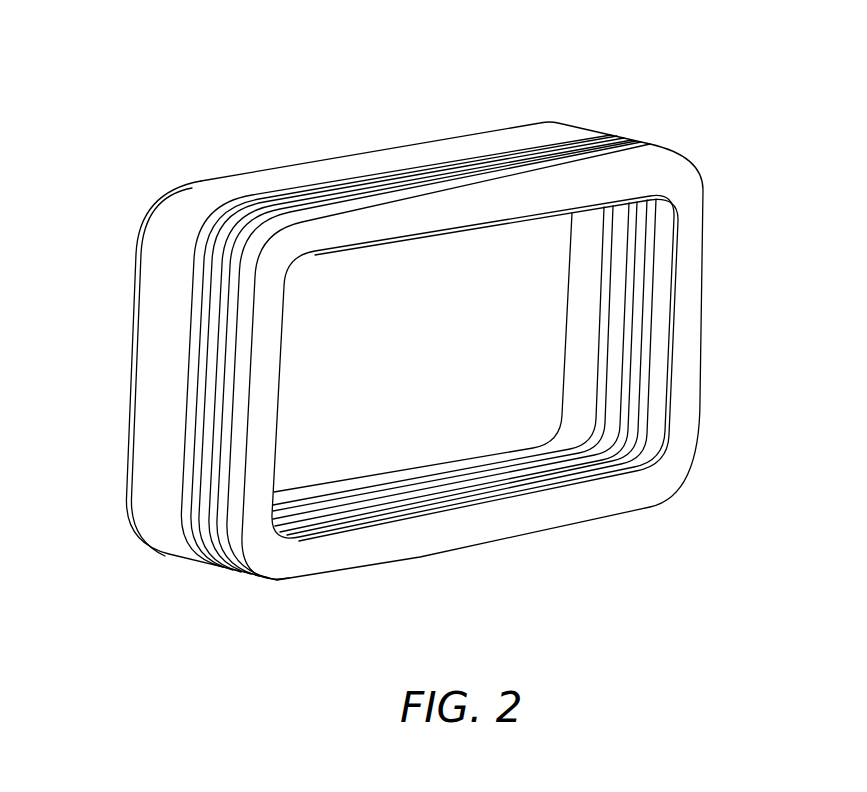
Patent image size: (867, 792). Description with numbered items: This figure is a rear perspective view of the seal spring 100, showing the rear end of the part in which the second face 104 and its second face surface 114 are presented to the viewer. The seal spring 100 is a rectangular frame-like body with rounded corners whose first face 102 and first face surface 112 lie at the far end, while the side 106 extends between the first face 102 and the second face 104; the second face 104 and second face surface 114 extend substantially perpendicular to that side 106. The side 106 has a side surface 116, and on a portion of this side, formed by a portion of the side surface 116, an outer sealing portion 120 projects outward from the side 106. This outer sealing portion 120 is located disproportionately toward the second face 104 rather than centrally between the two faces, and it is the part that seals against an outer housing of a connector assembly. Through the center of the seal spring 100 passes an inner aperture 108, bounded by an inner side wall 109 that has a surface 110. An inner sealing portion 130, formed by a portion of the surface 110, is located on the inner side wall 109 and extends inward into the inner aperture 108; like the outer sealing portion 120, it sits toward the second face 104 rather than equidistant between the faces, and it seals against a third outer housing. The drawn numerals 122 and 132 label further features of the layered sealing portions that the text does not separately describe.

The seal spring 100 is at (250, 148).
The first face 102 is at (145, 237).
The second face 104 is at (650, 490).
The side 106 is at (518, 133).
The inner aperture 108 is at (343, 467).
The inner side wall 109 is at (670, 322).
The surface 110 is at (587, 247).
The first face surface 112 is at (425, 143).
The second face surface 114 is at (687, 290).
The side surface 116 is at (157, 402).
The outer sealing portion 120 is at (207, 527).
The second layer 122 is at (218, 543).
The inner sealing portion 130 is at (635, 375).
The inner lip 132 is at (630, 333).